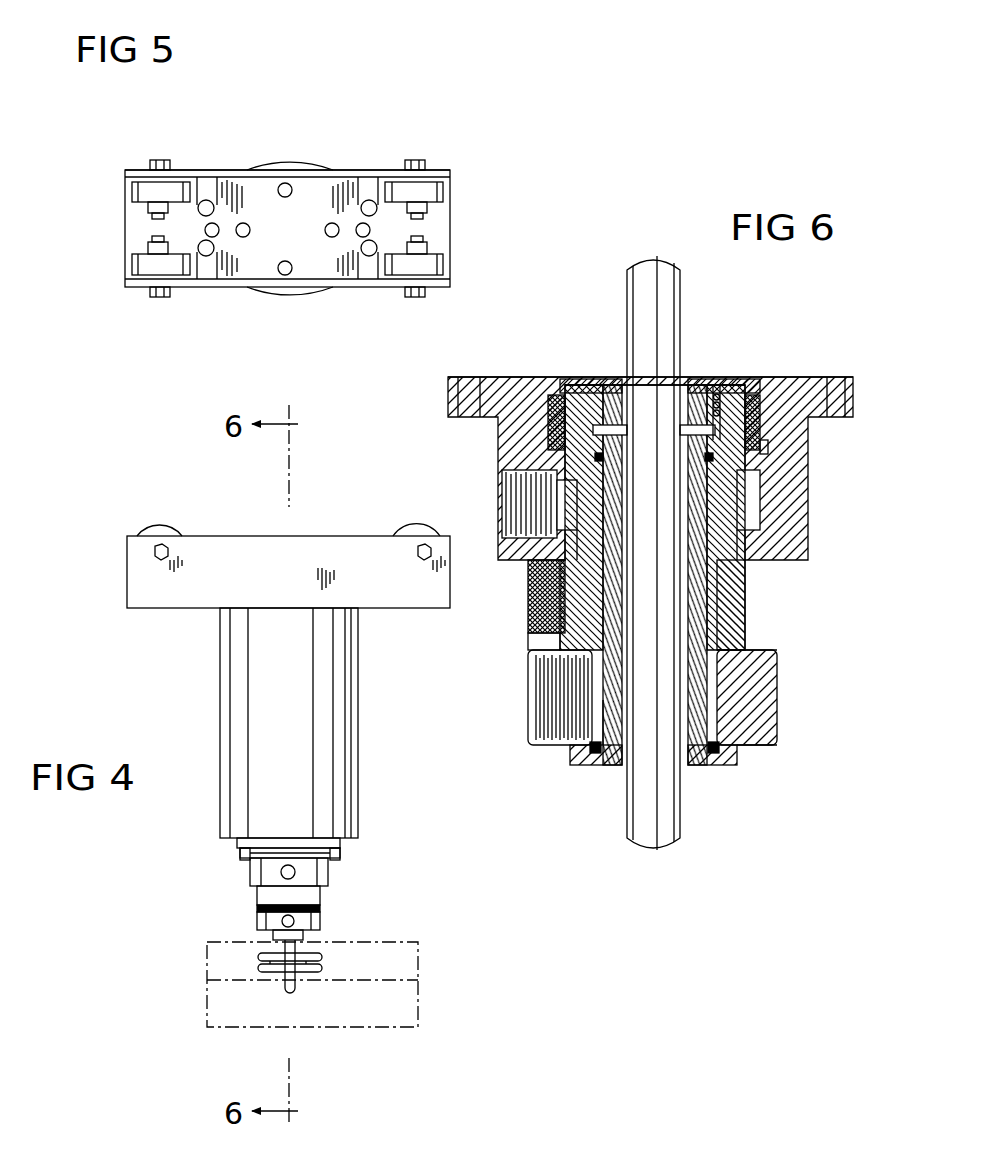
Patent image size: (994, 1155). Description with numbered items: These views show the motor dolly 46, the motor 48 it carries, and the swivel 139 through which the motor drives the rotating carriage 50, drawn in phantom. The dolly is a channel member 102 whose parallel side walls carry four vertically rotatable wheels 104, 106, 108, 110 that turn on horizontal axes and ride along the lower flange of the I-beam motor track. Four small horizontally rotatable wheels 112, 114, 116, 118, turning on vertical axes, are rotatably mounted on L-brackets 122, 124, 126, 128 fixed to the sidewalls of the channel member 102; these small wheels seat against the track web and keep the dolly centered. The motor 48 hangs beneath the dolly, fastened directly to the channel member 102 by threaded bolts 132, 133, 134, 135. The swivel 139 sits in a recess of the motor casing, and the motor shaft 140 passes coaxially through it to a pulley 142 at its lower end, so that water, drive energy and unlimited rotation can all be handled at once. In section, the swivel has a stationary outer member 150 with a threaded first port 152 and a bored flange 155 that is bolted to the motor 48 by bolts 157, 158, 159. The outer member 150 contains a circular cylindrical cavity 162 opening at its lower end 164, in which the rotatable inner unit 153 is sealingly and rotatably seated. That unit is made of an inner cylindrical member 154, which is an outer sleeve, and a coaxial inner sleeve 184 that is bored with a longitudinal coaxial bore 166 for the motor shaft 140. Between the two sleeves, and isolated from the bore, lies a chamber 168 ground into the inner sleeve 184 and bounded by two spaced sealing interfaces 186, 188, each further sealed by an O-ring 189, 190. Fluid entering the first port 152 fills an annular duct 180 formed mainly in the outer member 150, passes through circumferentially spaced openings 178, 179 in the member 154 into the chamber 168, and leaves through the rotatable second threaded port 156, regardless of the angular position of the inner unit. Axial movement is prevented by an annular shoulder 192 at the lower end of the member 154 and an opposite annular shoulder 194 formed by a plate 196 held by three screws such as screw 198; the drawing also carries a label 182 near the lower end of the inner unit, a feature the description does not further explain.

In FIG. 5, the motor dolly 46 is at (392, 178).
In FIG. 4, the motor dolly 46 is at (234, 560).
In FIG. 5, the motor 48 is at (268, 290).
In FIG. 4, the motor 48 is at (265, 698).
In FIG. 4, the carriage 50 is at (268, 1010).
In FIG. 5, the channel member 102 is at (327, 195).
In FIG. 4, the channel member 102 is at (303, 560).
In FIG. 5, the vertically rotatable wheel 104 is at (432, 185).
In FIG. 5, the vertically rotatable wheel 106 is at (420, 266).
In FIG. 4, the vertically rotatable wheel 106 is at (417, 528).
In FIG. 5, the vertically rotatable wheel 108 is at (151, 266).
In FIG. 4, the vertically rotatable wheel 108 is at (150, 528).
In FIG. 5, the vertically rotatable wheel 110 is at (155, 190).
In FIG. 5, the horizontally rotatable small wheel 112 is at (207, 252).
In FIG. 5, the horizontally rotatable small wheel 114 is at (209, 205).
In FIG. 5, the horizontally rotatable small wheel 116 is at (370, 190).
In FIG. 5, the horizontally rotatable small wheel 118 is at (370, 252).
In FIG. 5, the L-bracket 122 is at (208, 267).
In FIG. 5, the L-bracket 124 is at (204, 195).
In FIG. 5, the L-bracket 126 is at (372, 205).
In FIG. 5, the L-bracket 128 is at (371, 267).
In FIG. 5, the threaded bolt 132 is at (326, 231).
In FIG. 5, the threaded bolt 133 is at (286, 275).
In FIG. 5, the threaded bolt 134 is at (249, 229).
In FIG. 5, the threaded bolt 135 is at (286, 183).
In FIG. 4, the swivel 139 is at (248, 902).
In FIG. 6, the swivel 139 is at (778, 365).
In FIG. 4, the motor shaft 140 is at (293, 948).
In FIG. 6, the motor shaft 140 is at (647, 297).
In FIG. 4, the pulley 142 is at (308, 972).
In FIG. 6, the stationary outer member 150 is at (793, 497).
In FIG. 6, the first port 152 is at (500, 477).
In FIG. 6, the rotatable inner unit 153 is at (783, 677).
In FIG. 6, the inner cylindrical member 154 is at (768, 705).
In FIG. 6, the bored flange 155 is at (455, 396).
In FIG. 6, the second threaded port 156 is at (535, 702).
In FIG. 4, the bolt 157 is at (243, 853).
In FIG. 4, the bolt 158 is at (285, 853).
In FIG. 4, the bolt 159 is at (337, 853).
In FIG. 6, the circular cylindrical cavity 162 is at (582, 383).
In FIG. 6, the lower end 164 is at (757, 642).
In FIG. 6, the longitudinal coaxial bore 166 is at (685, 760).
In FIG. 6, the chamber 168 is at (710, 713).
In FIG. 6, the opening 178 is at (740, 502).
In FIG. 6, the opening 179 is at (578, 520).
In FIG. 6, the annular duct 180 is at (585, 503).
In FIG. 6, the end face 182 is at (779, 767).
In FIG. 6, the inner sleeve 184 is at (612, 760).
In FIG. 6, the interface 186 is at (725, 765).
In FIG. 6, the interface 188 is at (765, 395).
In FIG. 6, the O-ring 189 is at (597, 757).
In FIG. 6, the O-ring 190 is at (765, 447).
In FIG. 6, the annular shoulder 192 is at (548, 630).
In FIG. 6, the annular shoulder 194 is at (558, 393).
In FIG. 6, the plate 196 is at (698, 385).
In FIG. 6, the screw 198 is at (720, 383).